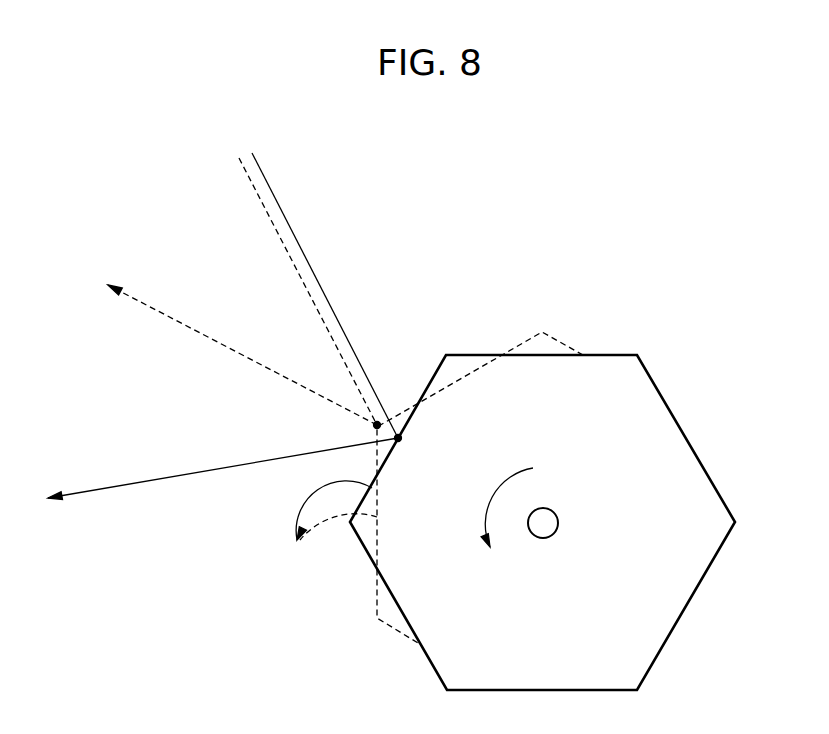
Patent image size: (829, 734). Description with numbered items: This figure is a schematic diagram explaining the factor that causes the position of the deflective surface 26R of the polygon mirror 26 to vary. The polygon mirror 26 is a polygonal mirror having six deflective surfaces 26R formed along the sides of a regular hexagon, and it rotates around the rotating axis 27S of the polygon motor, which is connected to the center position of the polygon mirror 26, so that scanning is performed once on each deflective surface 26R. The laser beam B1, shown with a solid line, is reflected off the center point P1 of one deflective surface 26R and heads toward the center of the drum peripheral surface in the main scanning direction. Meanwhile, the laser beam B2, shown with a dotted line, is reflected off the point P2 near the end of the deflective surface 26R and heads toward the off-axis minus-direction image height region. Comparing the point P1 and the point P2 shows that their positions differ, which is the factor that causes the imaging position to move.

The polygon mirror 26 is at (697, 400).
The deflective surface 26R is at (324, 525).
The rotating axis 27S is at (558, 521).
The point P1 is at (401, 437).
The point P2 is at (378, 420).
The laser beam B1 is at (182, 475).
The laser beam B2 is at (220, 345).